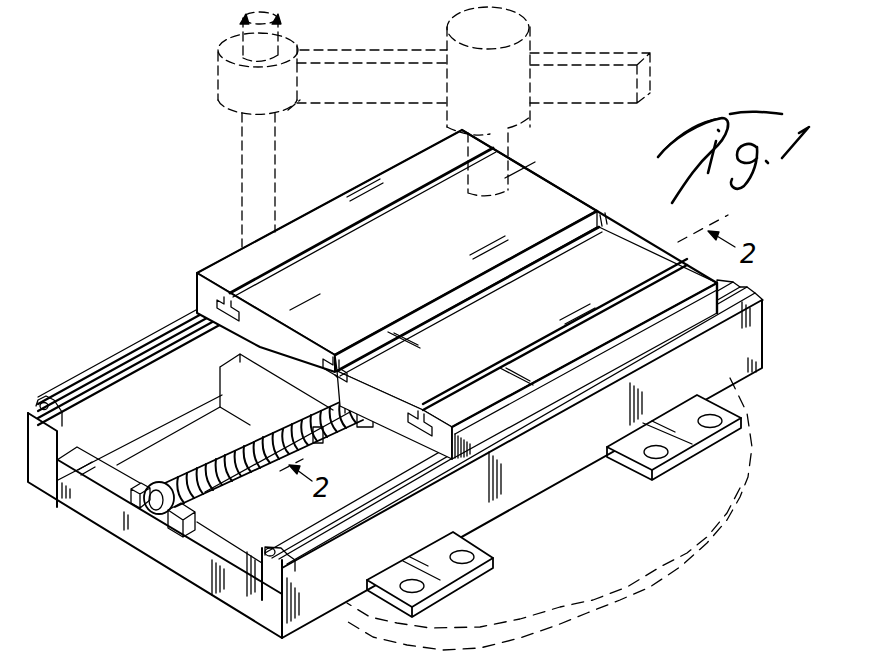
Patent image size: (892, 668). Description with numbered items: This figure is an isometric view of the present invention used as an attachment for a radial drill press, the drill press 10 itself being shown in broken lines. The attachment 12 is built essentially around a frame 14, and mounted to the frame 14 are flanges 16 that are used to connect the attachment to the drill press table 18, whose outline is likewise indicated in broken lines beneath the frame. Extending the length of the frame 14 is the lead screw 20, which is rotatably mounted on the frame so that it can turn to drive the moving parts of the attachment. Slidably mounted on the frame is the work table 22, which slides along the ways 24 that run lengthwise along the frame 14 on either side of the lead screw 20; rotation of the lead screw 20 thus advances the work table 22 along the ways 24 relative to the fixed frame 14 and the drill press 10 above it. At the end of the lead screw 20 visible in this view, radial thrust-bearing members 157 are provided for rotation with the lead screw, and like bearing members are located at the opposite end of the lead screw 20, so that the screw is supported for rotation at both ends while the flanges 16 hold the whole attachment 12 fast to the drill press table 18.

The drill press 10 is at (310, 37).
The attachment 12 is at (196, 275).
The frame 14 is at (556, 456).
The flanges 16 is at (677, 458).
The drill press table 18 is at (660, 570).
The lead screw 20 is at (252, 445).
The work table 22 is at (433, 254).
The ways 24 is at (93, 377).
The radial thrust-bearing members 157 is at (197, 505).